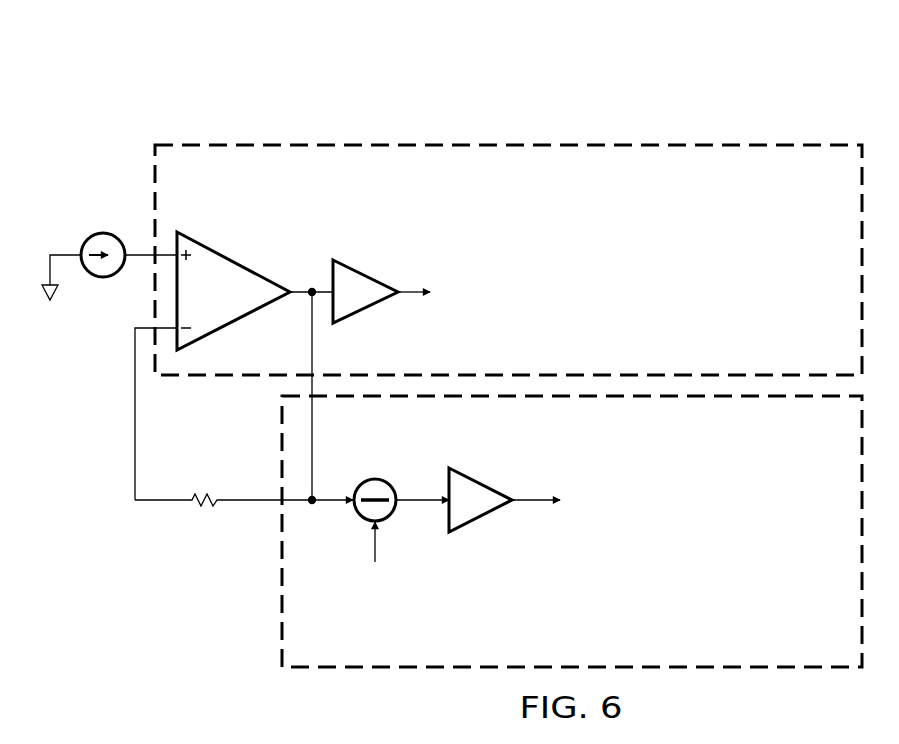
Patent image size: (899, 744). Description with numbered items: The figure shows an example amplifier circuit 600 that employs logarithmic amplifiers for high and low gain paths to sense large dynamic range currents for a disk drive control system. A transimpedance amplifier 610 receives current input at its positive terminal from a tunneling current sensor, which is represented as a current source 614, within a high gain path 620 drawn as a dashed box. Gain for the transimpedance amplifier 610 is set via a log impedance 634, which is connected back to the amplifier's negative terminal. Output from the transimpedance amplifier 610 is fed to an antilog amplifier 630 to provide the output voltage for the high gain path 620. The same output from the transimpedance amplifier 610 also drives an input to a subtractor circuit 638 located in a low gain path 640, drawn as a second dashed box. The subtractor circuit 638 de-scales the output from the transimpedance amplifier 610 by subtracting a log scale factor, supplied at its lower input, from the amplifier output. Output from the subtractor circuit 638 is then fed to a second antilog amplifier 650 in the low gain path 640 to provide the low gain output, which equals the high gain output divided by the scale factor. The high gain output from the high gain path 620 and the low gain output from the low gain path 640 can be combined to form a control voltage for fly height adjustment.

The amplifier circuit 600 is at (313, 70).
The transimpedance amplifier 610 is at (232, 255).
The current source 614 is at (100, 232).
The high gain path 620 is at (690, 141).
The antilog amplifier 630 is at (367, 277).
The log impedance 634 is at (200, 507).
The subtractor circuit 638 is at (385, 481).
The low gain path 640 is at (788, 672).
The antilog amplifier 650 is at (482, 482).